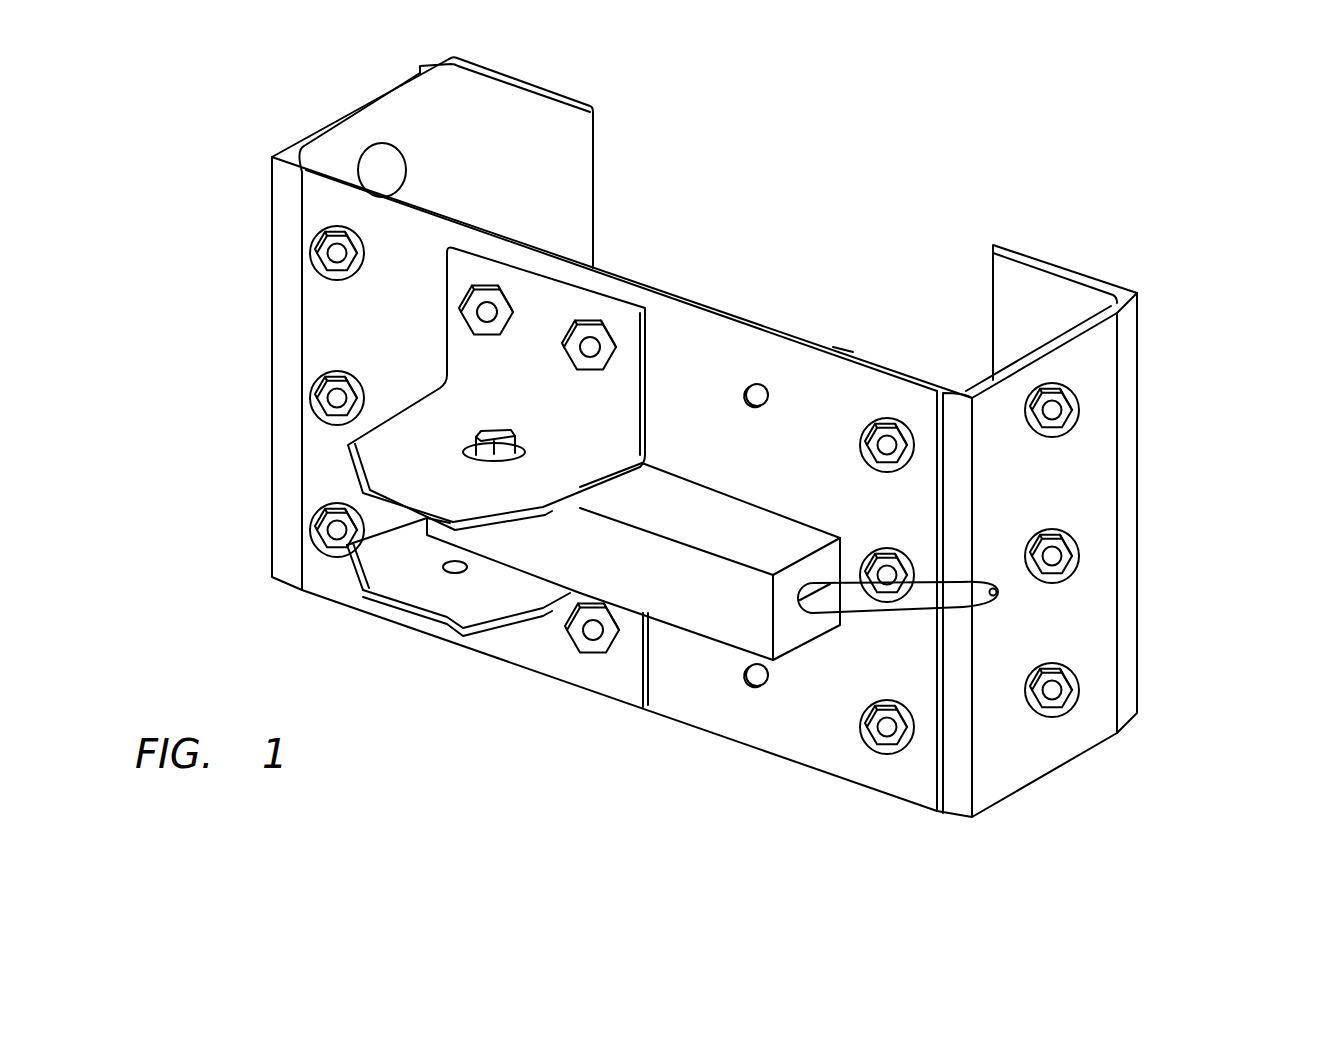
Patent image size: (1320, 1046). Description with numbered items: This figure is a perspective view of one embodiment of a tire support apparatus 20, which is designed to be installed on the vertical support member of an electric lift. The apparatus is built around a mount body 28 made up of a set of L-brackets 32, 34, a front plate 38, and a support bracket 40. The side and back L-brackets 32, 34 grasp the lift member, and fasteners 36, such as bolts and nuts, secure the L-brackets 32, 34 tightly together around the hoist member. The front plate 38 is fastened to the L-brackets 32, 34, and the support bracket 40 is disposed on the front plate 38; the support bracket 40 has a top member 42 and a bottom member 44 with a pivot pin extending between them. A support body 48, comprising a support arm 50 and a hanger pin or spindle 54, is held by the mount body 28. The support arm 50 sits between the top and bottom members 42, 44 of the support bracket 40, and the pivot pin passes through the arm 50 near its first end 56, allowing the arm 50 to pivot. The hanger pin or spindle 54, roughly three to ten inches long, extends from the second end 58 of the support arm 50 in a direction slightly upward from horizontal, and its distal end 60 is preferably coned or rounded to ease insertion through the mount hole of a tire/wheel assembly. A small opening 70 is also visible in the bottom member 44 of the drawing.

The tire support apparatus 20 is at (906, 120).
The mount body 28 is at (1162, 363).
The side L-bracket 32 is at (288, 196).
The back L-bracket 34 is at (537, 83).
The fasteners 36 is at (1077, 542).
The front plate 38 is at (688, 327).
The support bracket 40 is at (488, 674).
The top member 42 is at (567, 302).
The bottom member 44 is at (387, 578).
The support body 48 is at (493, 437).
The support arm 50 is at (682, 603).
The hanger pin or spindle 54 is at (867, 604).
The first end 56 is at (350, 545).
The second end 58 is at (790, 627).
The distal end 60 is at (975, 598).
The aperture 70 is at (465, 570).